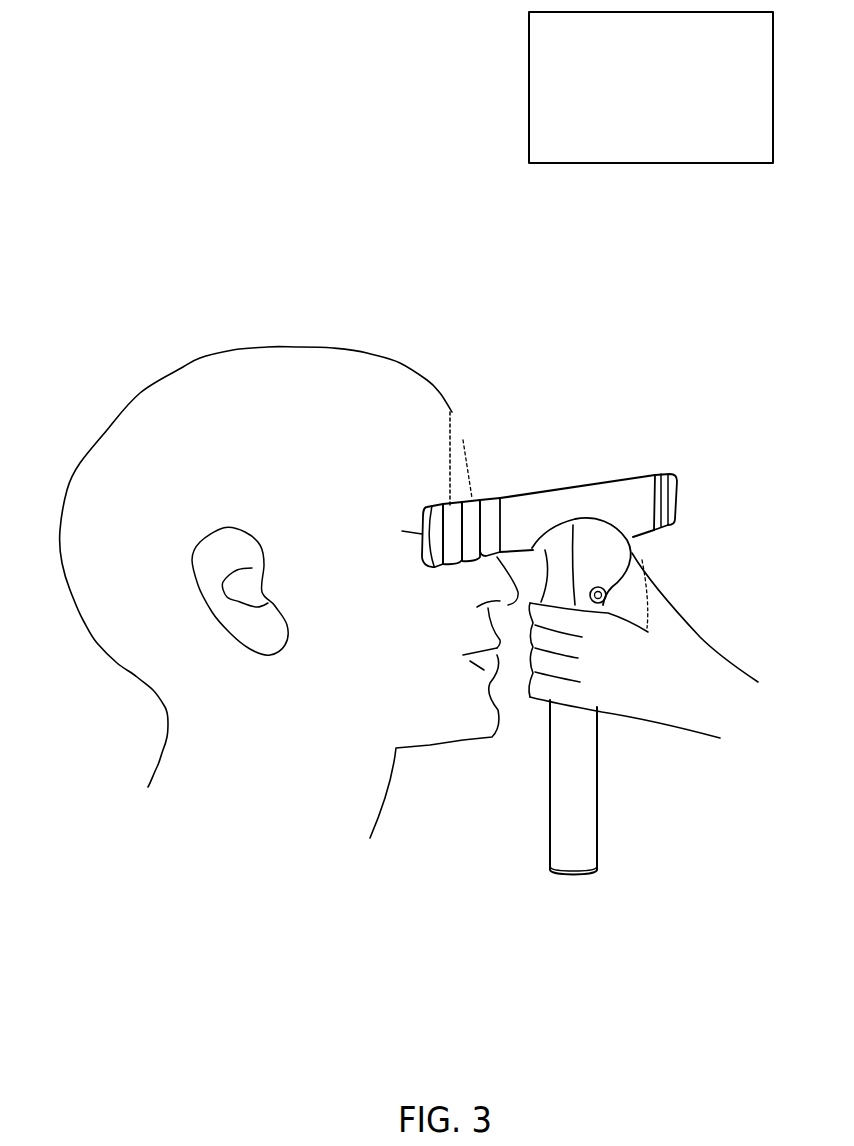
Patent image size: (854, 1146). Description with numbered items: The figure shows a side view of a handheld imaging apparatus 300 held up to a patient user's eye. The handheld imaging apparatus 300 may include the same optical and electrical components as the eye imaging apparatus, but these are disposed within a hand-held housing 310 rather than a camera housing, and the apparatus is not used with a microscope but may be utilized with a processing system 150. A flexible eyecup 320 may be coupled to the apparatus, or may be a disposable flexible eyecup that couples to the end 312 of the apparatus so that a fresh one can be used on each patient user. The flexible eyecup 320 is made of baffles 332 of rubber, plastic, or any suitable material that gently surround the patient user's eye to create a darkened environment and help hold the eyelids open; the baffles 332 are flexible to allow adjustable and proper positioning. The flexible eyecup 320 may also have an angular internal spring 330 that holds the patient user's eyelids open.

The processing system 150 is at (625, 490).
The handheld imaging apparatus 300 is at (662, 408).
The hand-held housing 310 is at (562, 518).
The end of the apparatus 312 is at (510, 500).
The flexible eyecup 320 is at (480, 500).
The baffles 332 is at (462, 500).
The angular internal spring 330 is at (453, 412).